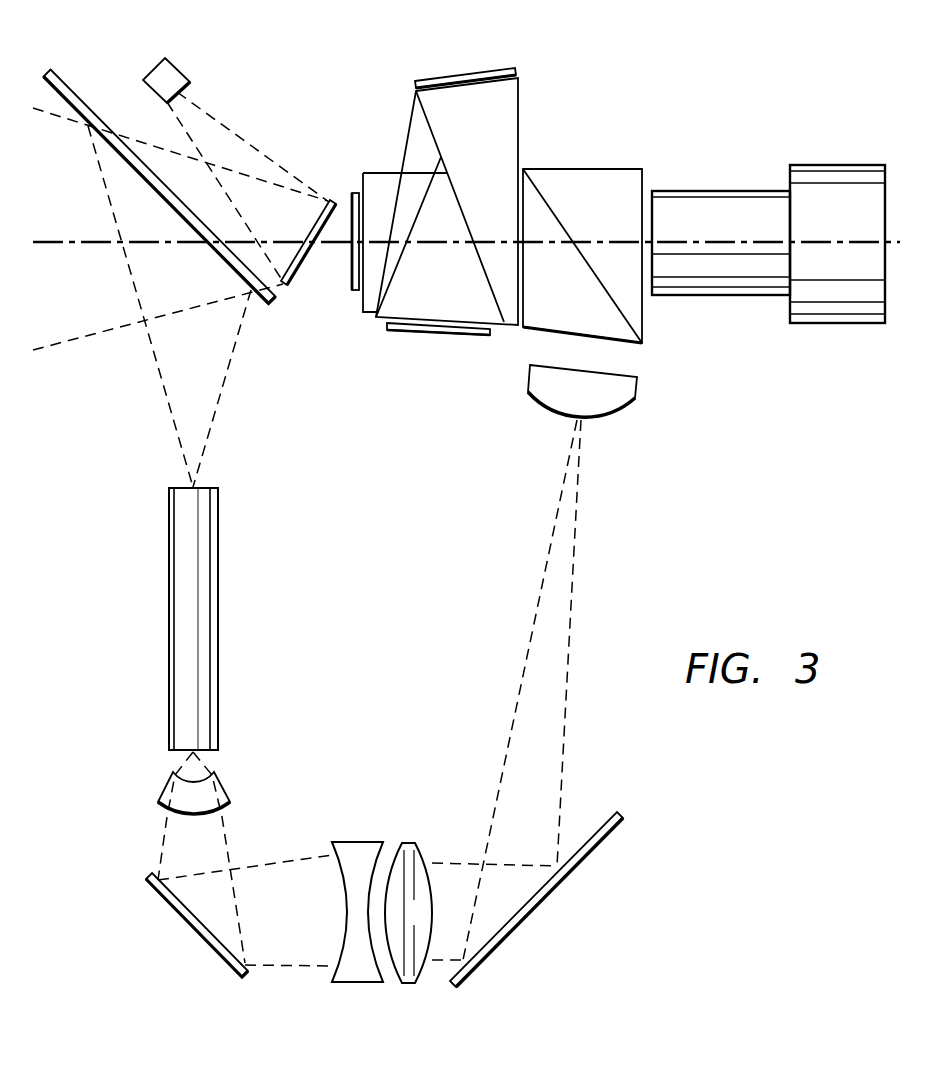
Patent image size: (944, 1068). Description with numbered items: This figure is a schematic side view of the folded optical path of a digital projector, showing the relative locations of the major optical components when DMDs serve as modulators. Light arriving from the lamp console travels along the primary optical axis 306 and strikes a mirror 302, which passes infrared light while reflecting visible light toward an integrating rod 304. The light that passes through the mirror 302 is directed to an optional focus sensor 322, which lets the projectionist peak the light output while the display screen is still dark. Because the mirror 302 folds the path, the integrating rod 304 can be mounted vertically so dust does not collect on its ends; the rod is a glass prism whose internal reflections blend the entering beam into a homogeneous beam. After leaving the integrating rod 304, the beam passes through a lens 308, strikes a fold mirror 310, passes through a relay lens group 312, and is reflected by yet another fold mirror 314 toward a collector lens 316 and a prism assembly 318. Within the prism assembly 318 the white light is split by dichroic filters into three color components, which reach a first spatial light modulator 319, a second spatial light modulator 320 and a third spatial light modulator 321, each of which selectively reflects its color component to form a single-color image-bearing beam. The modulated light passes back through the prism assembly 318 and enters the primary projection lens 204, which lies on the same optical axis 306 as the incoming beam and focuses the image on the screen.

The primary projection lens 204 is at (738, 190).
The mirror 302 is at (82, 99).
The integrating rod 304 is at (168, 662).
The primary optical axis 306 is at (93, 244).
The lens 308 is at (168, 786).
The fold mirror 310 is at (192, 927).
The relay lens group 312 is at (437, 989).
The mirror 314 is at (536, 907).
The collector lens 316 is at (637, 389).
The prism assembly 318 is at (645, 44).
The first spatial light modulator 319 is at (428, 74).
The second spatial light modulator 320 is at (452, 336).
The third spatial light modulator 321 is at (355, 292).
The focus sensor 322 is at (171, 63).